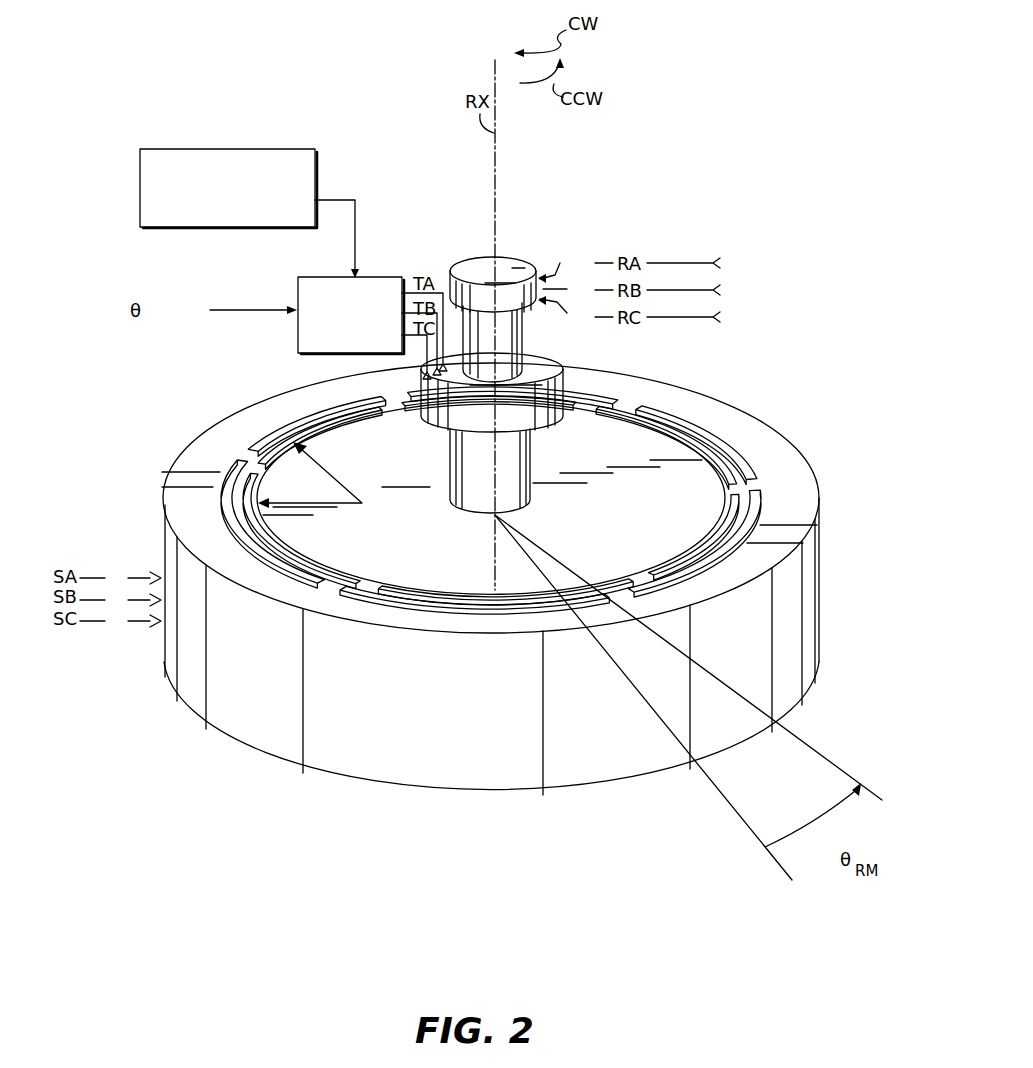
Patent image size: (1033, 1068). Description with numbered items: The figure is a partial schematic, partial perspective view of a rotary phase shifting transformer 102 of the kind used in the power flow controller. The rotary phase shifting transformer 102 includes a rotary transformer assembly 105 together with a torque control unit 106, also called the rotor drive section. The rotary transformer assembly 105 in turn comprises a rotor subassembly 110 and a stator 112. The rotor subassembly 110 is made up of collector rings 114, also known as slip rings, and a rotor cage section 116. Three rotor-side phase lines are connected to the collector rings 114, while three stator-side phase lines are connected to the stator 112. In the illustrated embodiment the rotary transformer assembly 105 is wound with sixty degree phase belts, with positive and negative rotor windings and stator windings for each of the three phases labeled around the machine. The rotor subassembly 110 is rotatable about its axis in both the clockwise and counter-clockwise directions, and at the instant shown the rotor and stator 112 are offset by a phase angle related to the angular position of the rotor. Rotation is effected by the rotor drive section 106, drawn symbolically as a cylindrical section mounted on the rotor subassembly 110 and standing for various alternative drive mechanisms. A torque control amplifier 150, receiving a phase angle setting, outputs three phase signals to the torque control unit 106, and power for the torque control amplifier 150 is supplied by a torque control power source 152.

The rotary phase shifting transformer 102 is at (778, 392).
The rotary transformer assembly 105 is at (840, 431).
The torque control unit 106 is at (428, 427).
The rotor subassembly 110 is at (548, 451).
The stator 112 is at (820, 580).
The collector rings 114 is at (461, 253).
The rotor cage section 116 is at (571, 527).
The torque control amplifier 150 is at (391, 282).
The torque control power source 152 is at (240, 160).